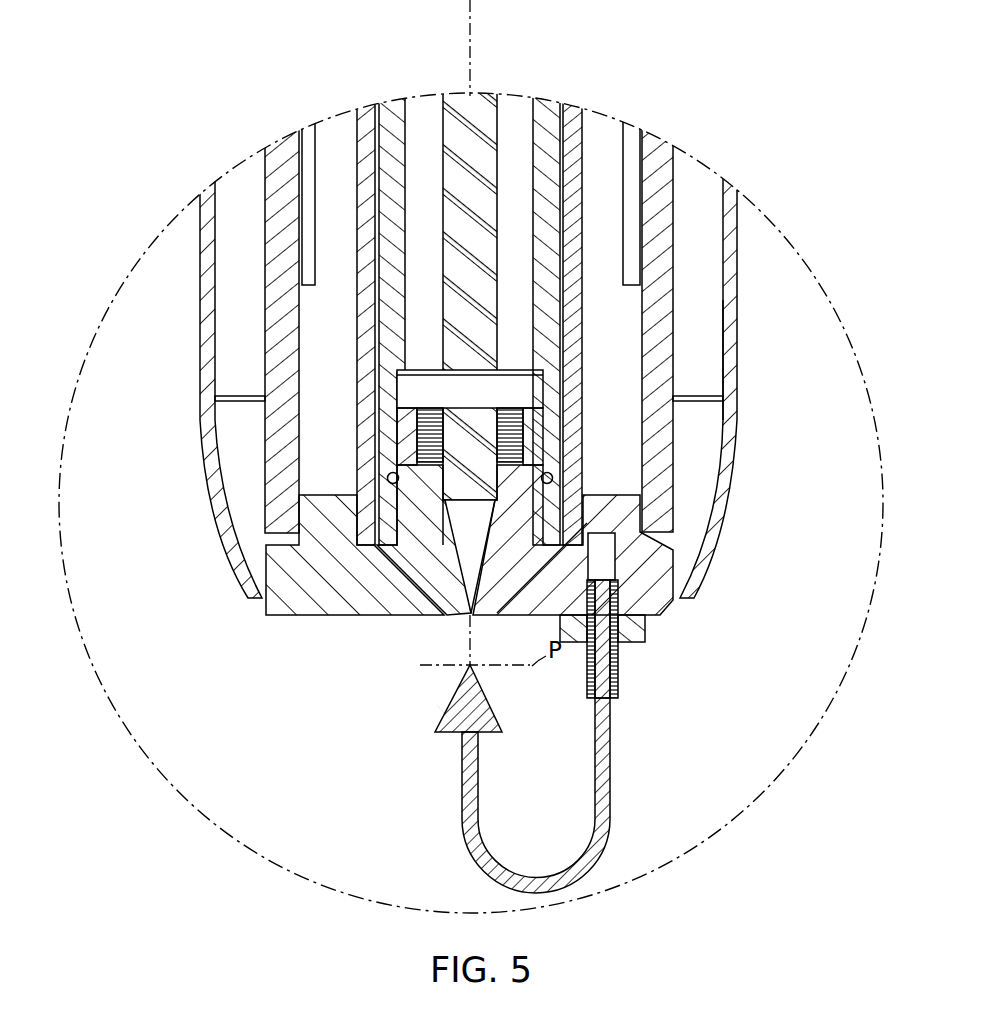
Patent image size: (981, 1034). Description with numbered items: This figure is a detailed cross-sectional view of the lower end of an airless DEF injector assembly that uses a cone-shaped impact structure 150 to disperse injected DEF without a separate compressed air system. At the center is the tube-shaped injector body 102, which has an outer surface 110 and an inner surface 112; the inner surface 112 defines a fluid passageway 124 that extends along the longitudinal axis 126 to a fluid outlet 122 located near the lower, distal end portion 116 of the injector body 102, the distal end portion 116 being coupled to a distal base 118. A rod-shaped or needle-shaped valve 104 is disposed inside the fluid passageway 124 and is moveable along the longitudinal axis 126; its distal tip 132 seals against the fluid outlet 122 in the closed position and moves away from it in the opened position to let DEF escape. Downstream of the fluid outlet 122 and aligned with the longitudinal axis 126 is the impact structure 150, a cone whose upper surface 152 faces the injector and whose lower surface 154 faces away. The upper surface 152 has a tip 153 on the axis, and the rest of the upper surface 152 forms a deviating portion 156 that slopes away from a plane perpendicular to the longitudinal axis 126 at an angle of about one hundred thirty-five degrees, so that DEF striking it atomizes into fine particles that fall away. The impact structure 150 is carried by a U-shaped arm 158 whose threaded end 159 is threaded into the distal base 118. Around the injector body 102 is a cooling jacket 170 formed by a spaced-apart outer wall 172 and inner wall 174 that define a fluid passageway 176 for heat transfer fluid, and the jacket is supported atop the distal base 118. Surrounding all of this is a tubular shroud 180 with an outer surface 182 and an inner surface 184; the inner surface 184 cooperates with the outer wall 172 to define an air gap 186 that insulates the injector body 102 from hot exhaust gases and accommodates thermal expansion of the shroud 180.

The injector body 102 is at (520, 183).
The valve 104 is at (461, 106).
The outer surface 110 is at (384, 104).
The inner surface 112 is at (533, 134).
The distal end portion 116 is at (424, 624).
The distal base 118 is at (284, 607).
The fluid outlet 122 is at (480, 622).
The fluid passageway 124 is at (566, 134).
The longitudinal axis 126 is at (477, 33).
The distal tip 132 is at (469, 563).
The impact structure 150 is at (457, 722).
The upper surface 152 is at (492, 706).
The tip 153 is at (469, 665).
The lower surface 154 is at (489, 736).
The deviating portion 156 is at (430, 712).
The U-shaped arm 158 is at (608, 846).
The threaded end 159 is at (620, 676).
The cooling jacket 170 is at (656, 144).
The outer wall 172 is at (282, 369).
The inner wall 174 is at (370, 323).
The fluid passageway 176 is at (328, 436).
The shroud 180 is at (731, 212).
The outer surface 182 is at (739, 347).
The inner surface 184 is at (729, 289).
The air gap 186 is at (699, 372).